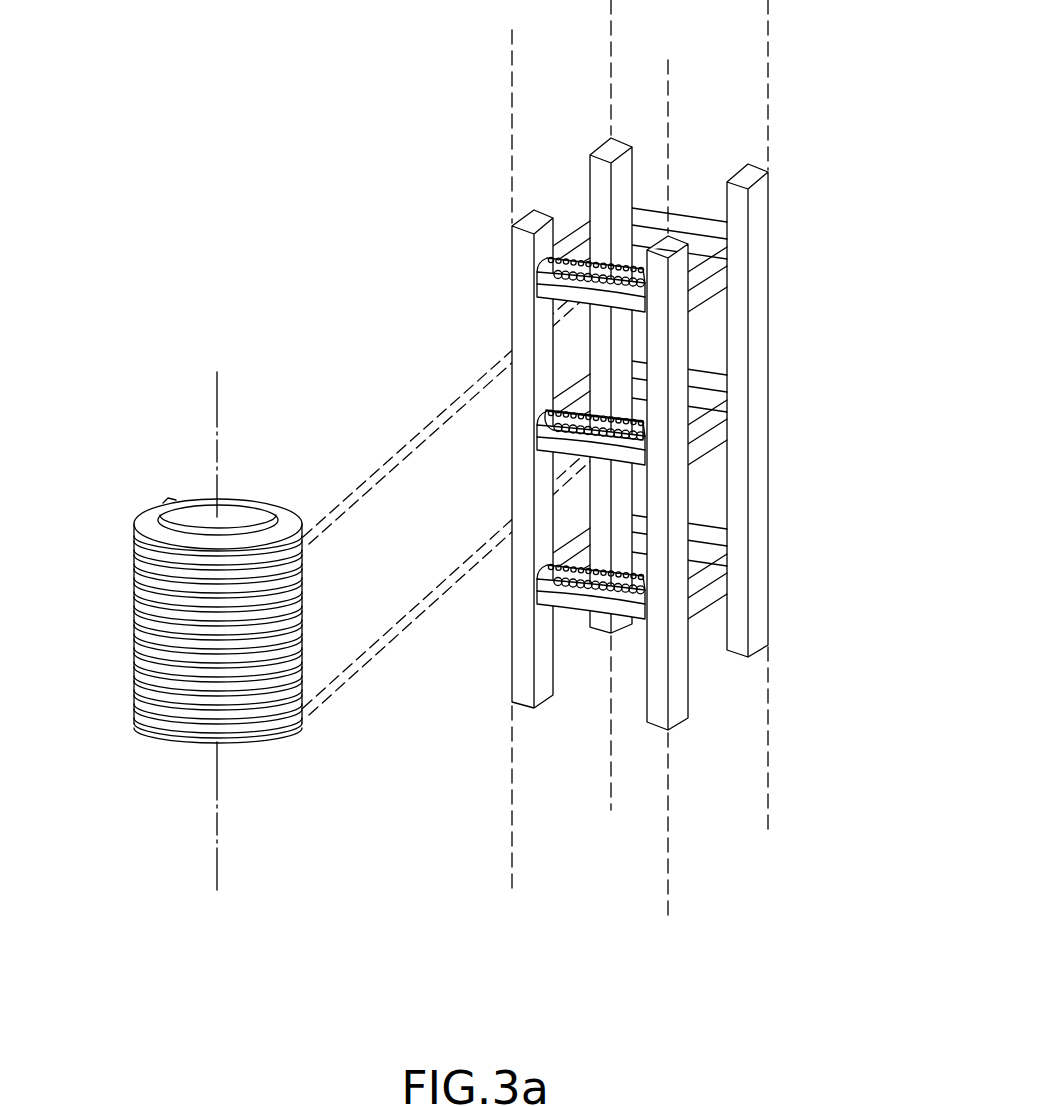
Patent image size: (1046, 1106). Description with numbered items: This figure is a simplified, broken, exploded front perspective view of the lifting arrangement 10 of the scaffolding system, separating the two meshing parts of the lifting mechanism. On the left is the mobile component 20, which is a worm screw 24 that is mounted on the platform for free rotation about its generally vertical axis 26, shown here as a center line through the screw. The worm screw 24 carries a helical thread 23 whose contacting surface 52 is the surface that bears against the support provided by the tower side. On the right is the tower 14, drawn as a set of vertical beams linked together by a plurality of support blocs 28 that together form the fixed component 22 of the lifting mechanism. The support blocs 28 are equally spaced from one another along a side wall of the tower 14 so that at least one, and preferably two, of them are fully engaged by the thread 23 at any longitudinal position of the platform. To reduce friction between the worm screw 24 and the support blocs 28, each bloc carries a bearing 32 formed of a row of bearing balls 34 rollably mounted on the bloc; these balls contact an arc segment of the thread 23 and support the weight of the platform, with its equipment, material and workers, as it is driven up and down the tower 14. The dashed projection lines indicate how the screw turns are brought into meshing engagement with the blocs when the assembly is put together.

The apparatus 10 is at (216, 156).
The tower 14 is at (779, 467).
The mobile component 20 is at (140, 801).
The fixed component 22 is at (583, 683).
The thread 23 is at (138, 600).
The worm screw 24 is at (150, 523).
The vertical axis 26 is at (218, 379).
The support bloc 28 is at (548, 445).
The bearing 32 is at (567, 412).
The bearing ball 34 is at (608, 263).
The contacting surface 52 is at (150, 730).